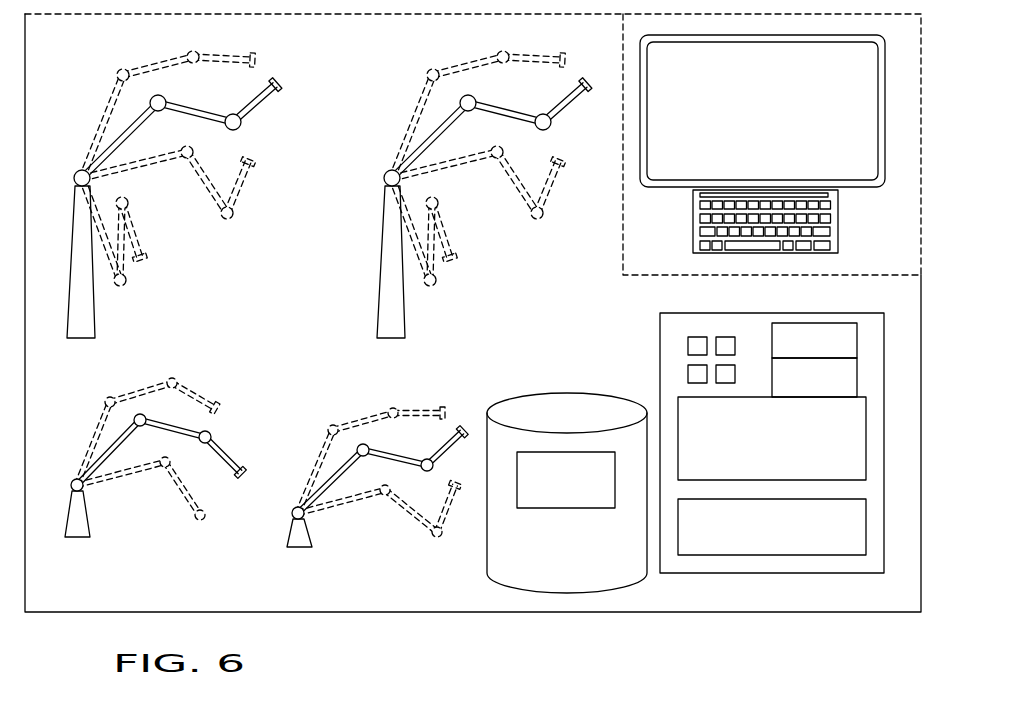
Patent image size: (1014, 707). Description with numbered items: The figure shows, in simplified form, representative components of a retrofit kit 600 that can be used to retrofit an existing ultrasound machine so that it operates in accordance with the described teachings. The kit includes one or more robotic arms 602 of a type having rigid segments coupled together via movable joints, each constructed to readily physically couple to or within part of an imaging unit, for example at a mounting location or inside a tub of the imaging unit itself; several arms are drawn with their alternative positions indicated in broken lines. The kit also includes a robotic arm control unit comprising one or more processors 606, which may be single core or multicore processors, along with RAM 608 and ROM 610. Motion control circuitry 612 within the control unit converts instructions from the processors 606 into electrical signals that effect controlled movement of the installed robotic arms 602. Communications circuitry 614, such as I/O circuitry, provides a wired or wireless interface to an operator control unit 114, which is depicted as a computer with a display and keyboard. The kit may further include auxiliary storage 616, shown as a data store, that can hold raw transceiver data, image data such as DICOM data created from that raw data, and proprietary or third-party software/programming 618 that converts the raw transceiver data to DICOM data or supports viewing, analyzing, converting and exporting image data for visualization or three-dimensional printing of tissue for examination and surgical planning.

The retrofit kit 600 is at (41, 45).
The robotic arms 602 is at (183, 222).
The operator control unit 114 is at (660, 228).
The processors 606 is at (698, 388).
The RAM 608 is at (793, 353).
The ROM 610 is at (793, 390).
The motion control circuitry 612 is at (752, 449).
The communications circuitry 614 is at (752, 540).
The auxiliary storage 616 is at (567, 493).
The software/programming 618 is at (547, 492).